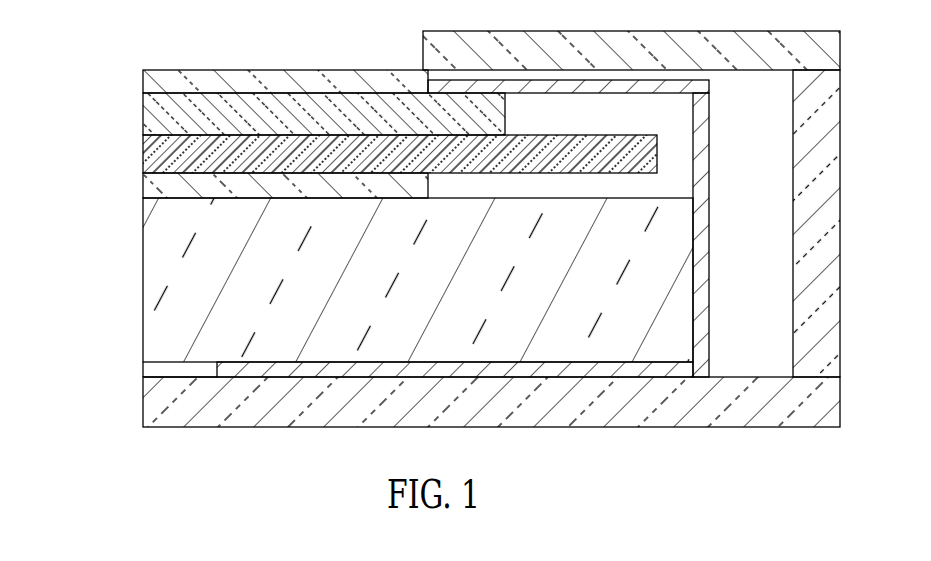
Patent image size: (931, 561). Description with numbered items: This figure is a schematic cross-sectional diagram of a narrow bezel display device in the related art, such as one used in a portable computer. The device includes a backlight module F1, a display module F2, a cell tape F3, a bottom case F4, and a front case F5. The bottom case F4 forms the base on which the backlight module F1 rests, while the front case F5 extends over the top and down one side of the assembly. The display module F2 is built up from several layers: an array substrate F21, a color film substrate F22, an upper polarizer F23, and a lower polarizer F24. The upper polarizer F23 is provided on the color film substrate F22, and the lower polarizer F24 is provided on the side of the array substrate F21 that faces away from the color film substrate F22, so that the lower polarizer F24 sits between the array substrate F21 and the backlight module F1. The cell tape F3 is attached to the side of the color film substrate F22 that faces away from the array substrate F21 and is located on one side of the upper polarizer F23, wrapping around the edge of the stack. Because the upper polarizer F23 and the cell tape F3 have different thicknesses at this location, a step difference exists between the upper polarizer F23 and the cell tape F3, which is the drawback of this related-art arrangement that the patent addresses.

The backlight module F1 is at (178, 327).
The display module F2 is at (332, 138).
The array substrate F21 is at (177, 152).
The color film substrate F22 is at (177, 114).
The upper polarizer F23 is at (177, 77).
The lower polarizer F24 is at (250, 189).
The cell tape F3 is at (702, 177).
The bottom case F4 is at (178, 400).
The front case F5 is at (730, 58).